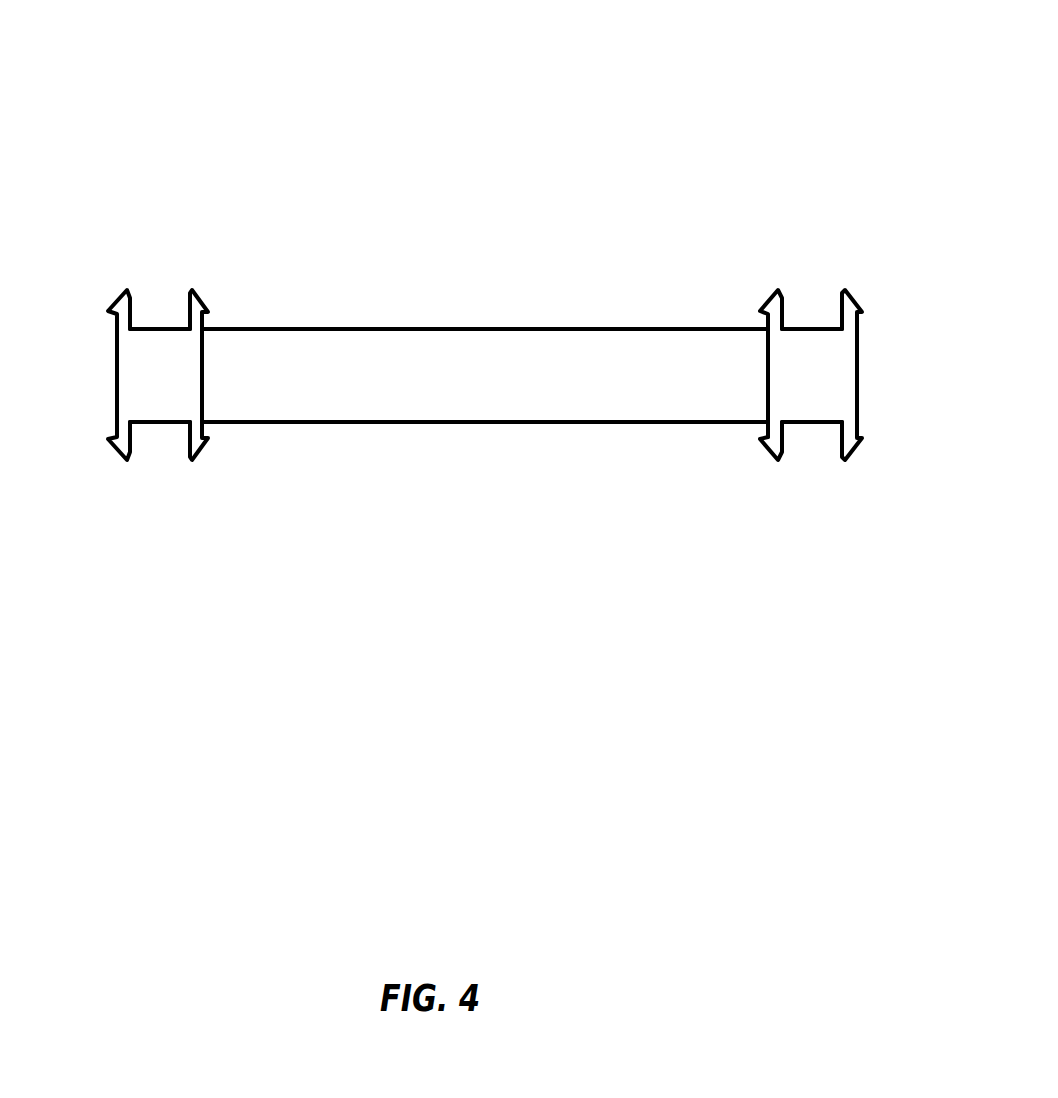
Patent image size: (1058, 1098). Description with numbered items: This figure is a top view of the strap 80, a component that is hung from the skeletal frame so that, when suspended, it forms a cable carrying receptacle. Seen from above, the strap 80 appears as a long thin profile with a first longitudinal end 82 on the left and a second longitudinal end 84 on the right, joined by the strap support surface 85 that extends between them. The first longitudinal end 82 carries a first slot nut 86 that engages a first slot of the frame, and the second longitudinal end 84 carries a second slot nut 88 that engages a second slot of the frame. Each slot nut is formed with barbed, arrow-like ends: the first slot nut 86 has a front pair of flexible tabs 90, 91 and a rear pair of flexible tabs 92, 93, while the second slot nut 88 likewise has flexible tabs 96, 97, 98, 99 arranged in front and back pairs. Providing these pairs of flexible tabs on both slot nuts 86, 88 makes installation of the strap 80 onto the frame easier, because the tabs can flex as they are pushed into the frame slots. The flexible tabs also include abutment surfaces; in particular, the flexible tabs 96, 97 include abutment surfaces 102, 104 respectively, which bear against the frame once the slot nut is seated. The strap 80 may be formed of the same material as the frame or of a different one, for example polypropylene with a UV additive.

The strap 80 is at (737, 127).
The first longitudinal end 82 is at (232, 285).
The second longitudinal end 84 is at (872, 295).
The strap support surface 85 is at (417, 355).
The first slot nut 86 is at (157, 402).
The second slot nut 88 is at (807, 405).
The flexible tab 90 is at (123, 460).
The flexible tab 91 is at (207, 458).
The flexible tab 92 is at (197, 288).
The flexible tab 93 is at (120, 292).
The flexible tab 96 is at (780, 460).
The flexible tab 97 is at (857, 450).
The flexible tab 98 is at (853, 293).
The flexible tab 99 is at (777, 290).
The abutment surface 102 is at (763, 434).
The abutment surface 104 is at (860, 433).